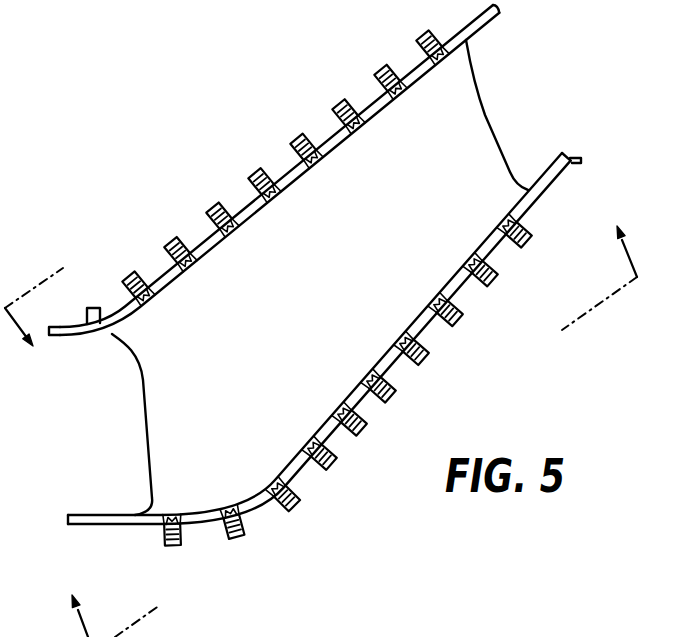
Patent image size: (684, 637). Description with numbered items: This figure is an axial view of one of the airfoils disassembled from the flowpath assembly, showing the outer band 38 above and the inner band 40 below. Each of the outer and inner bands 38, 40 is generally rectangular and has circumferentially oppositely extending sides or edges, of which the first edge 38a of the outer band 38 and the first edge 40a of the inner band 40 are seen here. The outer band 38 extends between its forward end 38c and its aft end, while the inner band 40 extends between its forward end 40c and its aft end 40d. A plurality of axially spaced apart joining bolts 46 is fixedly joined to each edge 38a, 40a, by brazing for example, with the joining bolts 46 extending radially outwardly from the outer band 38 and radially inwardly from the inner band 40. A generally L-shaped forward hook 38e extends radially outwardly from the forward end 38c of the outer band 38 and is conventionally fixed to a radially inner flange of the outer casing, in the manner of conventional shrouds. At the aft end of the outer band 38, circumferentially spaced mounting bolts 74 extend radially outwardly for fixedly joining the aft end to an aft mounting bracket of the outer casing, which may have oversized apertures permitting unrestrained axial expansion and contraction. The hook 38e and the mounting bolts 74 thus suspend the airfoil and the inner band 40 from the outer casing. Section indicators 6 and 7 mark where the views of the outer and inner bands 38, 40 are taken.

The outer band 38 is at (158, 278).
The first edge of outer band 38a is at (468, 24).
The forward end of outer band 38c is at (74, 325).
The forward hook 38e is at (95, 306).
The joining bolts 46 is at (258, 172).
The mounting bolts 74 is at (422, 37).
The inner band 40 is at (258, 502).
The first edge of inner band 40a is at (323, 432).
The forward end of inner band 40c is at (107, 526).
The aft end of inner band 40d is at (554, 172).
The section line 6- 6 is at (265, 188).
The section line 7- 7 is at (347, 414).